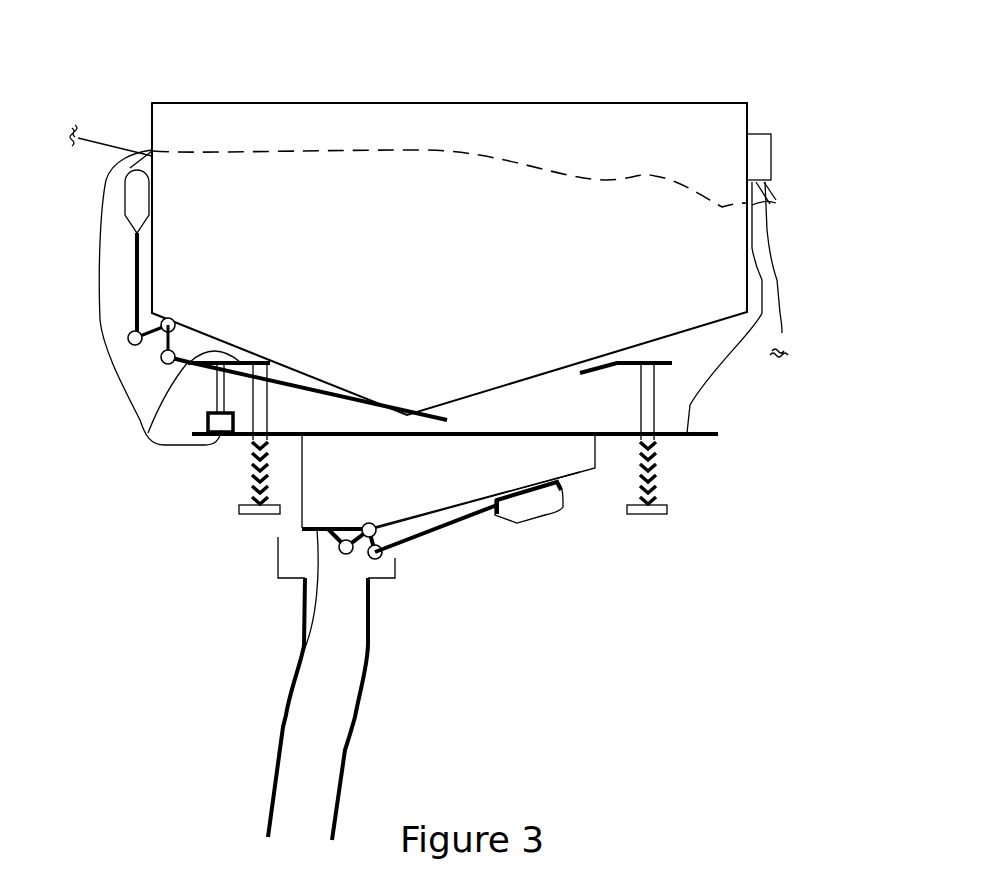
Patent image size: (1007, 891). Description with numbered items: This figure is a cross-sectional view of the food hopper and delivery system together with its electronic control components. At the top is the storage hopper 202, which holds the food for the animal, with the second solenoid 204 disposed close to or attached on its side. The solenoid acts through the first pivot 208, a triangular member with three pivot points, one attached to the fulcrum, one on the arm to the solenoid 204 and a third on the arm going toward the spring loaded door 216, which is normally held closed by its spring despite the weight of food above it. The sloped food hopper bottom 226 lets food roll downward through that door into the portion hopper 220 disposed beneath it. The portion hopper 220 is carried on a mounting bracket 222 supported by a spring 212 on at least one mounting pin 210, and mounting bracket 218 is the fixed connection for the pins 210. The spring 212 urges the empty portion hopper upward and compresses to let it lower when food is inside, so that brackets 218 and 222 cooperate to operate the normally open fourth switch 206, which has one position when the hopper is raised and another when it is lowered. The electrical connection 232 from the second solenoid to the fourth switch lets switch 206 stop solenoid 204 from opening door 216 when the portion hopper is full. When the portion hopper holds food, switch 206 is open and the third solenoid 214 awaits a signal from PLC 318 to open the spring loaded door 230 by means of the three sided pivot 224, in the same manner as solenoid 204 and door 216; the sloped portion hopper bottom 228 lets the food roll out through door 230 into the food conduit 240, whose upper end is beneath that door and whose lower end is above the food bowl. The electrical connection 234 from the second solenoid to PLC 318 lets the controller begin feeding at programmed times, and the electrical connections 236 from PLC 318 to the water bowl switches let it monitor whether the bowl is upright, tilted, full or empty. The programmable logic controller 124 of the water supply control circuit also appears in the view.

The programmable logic controller 124 is at (98, 145).
The storage hopper 202 is at (277, 83).
The second solenoid 204 is at (130, 207).
The fourth switch 206 is at (218, 419).
The first pivot 208 is at (139, 346).
The mounting pin 210 is at (652, 514).
The spring 212 is at (658, 490).
The third solenoid 214 is at (537, 507).
The spring loaded door 216 is at (418, 403).
The mounting bracket 218 is at (188, 365).
The portion hopper 220 is at (328, 500).
The mounting bracket 222 is at (700, 437).
The three sided pivot 224 is at (346, 554).
The sloped food hopper bottom 226 is at (233, 330).
The sloped portion hopper bottom 228 is at (413, 517).
The spring loaded door 230 is at (298, 667).
The electrical connection from second solenoid to fourth switch 232 is at (150, 462).
The electrical connection from second solenoid to PLC 234 is at (422, 150).
The electrical connections from PLC to water bowl switches 236 is at (785, 333).
The food conduit 240 is at (328, 700).
The PLC 318 is at (763, 155).